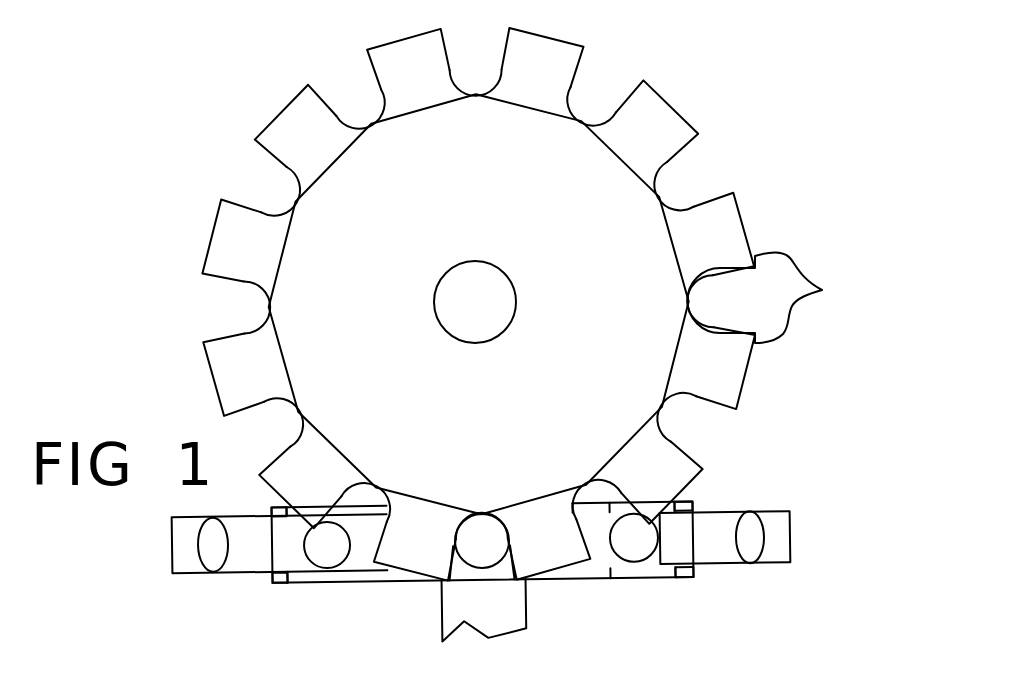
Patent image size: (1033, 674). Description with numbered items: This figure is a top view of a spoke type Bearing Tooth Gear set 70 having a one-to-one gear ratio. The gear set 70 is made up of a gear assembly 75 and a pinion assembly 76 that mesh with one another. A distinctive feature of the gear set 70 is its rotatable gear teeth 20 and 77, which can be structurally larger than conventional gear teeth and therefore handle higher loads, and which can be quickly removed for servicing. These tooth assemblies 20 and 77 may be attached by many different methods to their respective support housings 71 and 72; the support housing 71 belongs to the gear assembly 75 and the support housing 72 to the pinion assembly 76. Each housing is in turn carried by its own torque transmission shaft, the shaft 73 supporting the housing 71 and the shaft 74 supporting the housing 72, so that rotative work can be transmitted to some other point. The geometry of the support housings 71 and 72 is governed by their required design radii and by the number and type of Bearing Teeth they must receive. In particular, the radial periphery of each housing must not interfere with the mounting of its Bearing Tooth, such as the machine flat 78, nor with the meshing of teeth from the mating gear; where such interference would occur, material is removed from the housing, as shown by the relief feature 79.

The spoke type Bearing Tooth Gear set 70 is at (127, 320).
The support housing 71 is at (620, 210).
The torque transmission shaft 73 is at (472, 262).
The gear assembly 75 is at (578, 118).
The machine flat 78 is at (680, 358).
The rotatable gear tooth 20 is at (787, 298).
The rotatable gear tooth 77 is at (715, 511).
The support housing 72 is at (400, 575).
The pinion assembly 76 is at (287, 580).
The torque transmission shaft 74 is at (440, 640).
The material removal feature 79 is at (613, 578).